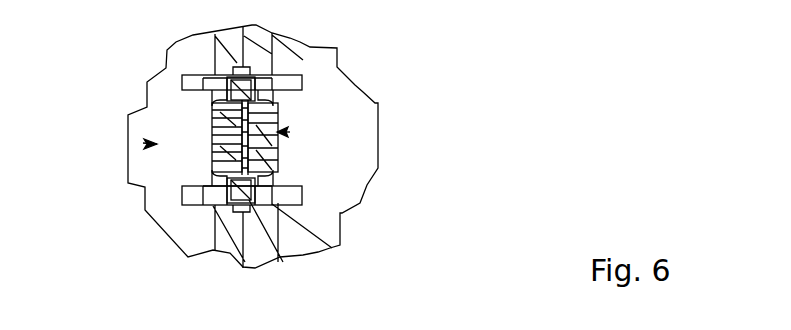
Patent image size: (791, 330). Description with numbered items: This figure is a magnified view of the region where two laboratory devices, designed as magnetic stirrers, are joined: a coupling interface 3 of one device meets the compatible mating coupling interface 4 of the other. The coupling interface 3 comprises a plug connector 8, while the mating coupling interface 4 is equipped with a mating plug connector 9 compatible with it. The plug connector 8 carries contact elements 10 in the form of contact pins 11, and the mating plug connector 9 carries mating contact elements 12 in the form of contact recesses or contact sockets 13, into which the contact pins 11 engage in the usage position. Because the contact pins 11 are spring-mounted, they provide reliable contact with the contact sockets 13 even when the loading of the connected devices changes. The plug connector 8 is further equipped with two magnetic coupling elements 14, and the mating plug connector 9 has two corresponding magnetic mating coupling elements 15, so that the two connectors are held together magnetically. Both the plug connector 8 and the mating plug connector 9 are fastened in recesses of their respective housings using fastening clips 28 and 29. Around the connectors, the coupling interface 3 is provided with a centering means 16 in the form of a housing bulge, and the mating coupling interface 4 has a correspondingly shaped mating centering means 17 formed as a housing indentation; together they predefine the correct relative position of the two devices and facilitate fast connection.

The coupling interface 3 is at (263, 150).
The mating coupling interface 4 is at (213, 128).
The plug connector 8 is at (260, 110).
The mating plug connector 9 is at (213, 117).
The contact element 10 is at (276, 143).
The contact pin 11 is at (290, 132).
The mating contact element 12 is at (143, 143).
The contact socket 13 is at (213, 145).
The magnetic coupling element 14 is at (278, 85).
The magnetic mating coupling element 15 is at (190, 85).
The centering means 16 is at (258, 225).
The mating centering means 17 is at (230, 229).
The fastening clip 28 is at (277, 72).
The fastening clip 29 is at (205, 75).